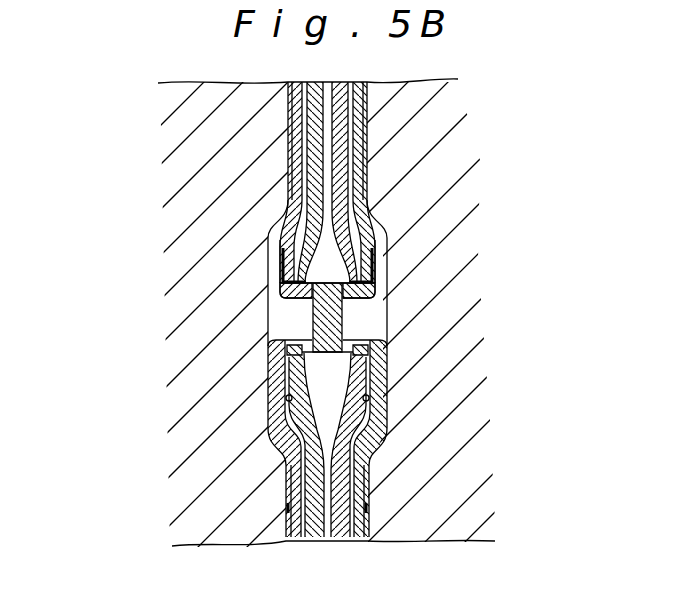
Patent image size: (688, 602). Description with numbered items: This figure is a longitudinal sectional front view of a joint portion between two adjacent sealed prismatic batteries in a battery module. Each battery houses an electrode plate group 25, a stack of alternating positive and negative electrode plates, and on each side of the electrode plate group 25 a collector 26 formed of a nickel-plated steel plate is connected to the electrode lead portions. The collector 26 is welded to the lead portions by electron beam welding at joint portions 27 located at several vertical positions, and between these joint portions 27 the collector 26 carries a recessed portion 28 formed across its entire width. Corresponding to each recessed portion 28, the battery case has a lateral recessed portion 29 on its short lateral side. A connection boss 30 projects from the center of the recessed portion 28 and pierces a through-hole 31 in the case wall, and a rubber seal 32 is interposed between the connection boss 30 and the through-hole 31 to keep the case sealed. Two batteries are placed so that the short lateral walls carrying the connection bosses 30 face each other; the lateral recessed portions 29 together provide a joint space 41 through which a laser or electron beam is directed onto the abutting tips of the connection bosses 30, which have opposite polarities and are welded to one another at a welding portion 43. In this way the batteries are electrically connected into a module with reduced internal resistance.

The electrode plate group 25 is at (170, 243).
The collector 26 is at (297, 143).
The joint portion 27 is at (288, 115).
The recessed portion 28 is at (268, 255).
The lateral recessed portion 29 is at (268, 312).
The connection boss 30 is at (268, 341).
The through-hole 31 is at (268, 364).
The rubber seal 32 is at (268, 285).
The joint space 41 is at (340, 383).
The welding portion 43 is at (340, 328).